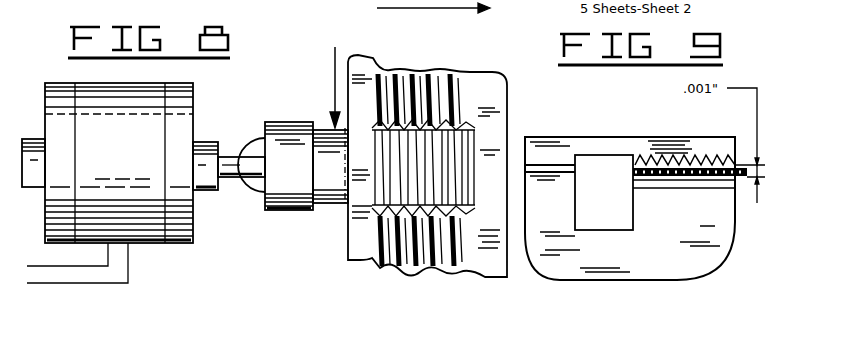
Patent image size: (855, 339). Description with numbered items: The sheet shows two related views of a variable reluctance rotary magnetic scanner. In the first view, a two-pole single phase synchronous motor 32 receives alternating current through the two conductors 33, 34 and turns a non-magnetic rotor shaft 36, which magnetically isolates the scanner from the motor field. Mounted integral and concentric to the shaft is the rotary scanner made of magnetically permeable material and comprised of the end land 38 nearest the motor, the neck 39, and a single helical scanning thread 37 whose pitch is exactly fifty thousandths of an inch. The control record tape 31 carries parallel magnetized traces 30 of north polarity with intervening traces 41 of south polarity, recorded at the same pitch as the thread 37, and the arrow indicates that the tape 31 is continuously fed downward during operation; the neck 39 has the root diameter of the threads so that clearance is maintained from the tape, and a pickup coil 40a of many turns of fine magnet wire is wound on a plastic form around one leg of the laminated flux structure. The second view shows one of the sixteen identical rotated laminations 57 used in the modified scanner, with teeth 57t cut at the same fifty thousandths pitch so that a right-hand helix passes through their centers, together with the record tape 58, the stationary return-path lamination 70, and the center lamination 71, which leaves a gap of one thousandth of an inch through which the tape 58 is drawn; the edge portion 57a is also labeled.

In FIG. 8, the traces 30 is at (447, 52).
In FIG. 8, the tape 31 is at (500, 267).
In FIG. 8, the synchronous motor 32 is at (177, 243).
In FIG. 8, the conductor 33 is at (52, 265).
In FIG. 8, the conductor 34 is at (108, 283).
In FIG. 8, the rotor shaft 36 is at (232, 160).
In FIG. 8, the scanning threads 37 is at (472, 126).
In FIG. 8, the end land 38 is at (298, 132).
In FIG. 8, the neck 39 is at (330, 203).
In FIG. 8, the coil 40a is at (252, 152).
In FIG. 8, the intervening traces 41 is at (404, 72).
In FIG. 9, the laminations 57 is at (667, 140).
In FIG. 9, the member plate 57a is at (598, 147).
In FIG. 9, the teeth 57t is at (644, 148).
In FIG. 9, the control tape 58 is at (655, 183).
In FIG. 9, the stationary lamination 70 is at (590, 281).
In FIG. 9, the center lamination 71 is at (643, 183).